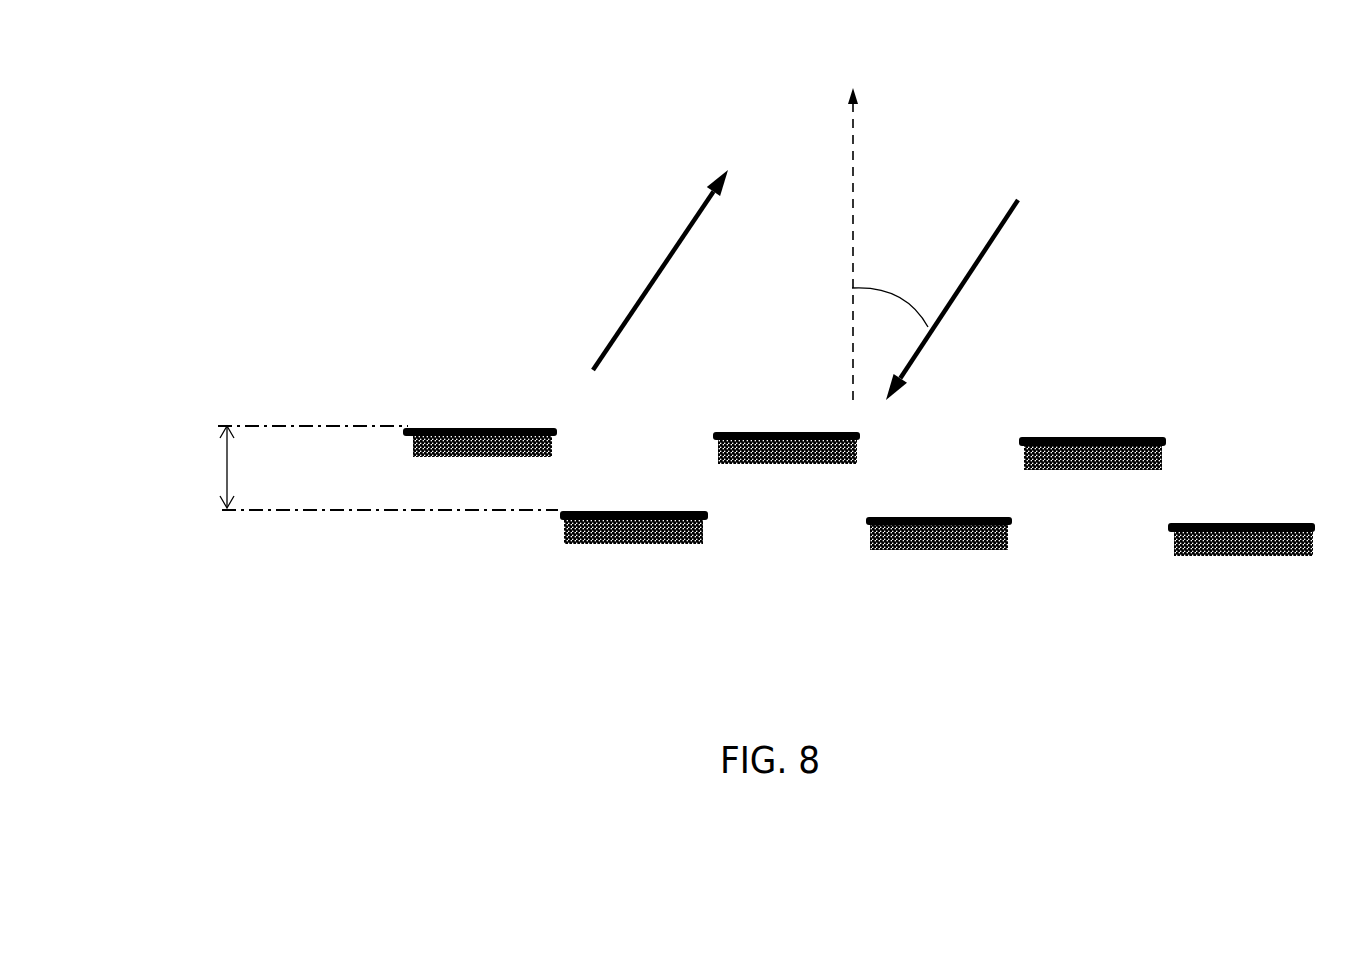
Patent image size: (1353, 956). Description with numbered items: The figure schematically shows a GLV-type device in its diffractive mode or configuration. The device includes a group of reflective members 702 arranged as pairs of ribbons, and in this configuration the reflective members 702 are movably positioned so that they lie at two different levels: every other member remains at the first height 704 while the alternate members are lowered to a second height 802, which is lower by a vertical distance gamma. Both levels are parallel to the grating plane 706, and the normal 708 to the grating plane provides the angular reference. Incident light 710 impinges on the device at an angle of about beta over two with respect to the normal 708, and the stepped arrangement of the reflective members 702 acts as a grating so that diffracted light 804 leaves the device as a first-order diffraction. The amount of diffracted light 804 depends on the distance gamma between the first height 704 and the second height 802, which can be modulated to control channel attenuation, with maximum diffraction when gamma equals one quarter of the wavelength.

The reflective members 702 is at (486, 425).
The first height 704 is at (333, 427).
The grating plane 706 is at (318, 425).
The normal to grating plane 708 is at (853, 190).
The incident light 710 is at (978, 260).
The second height 802 is at (438, 512).
The diffracted light 804 is at (632, 305).